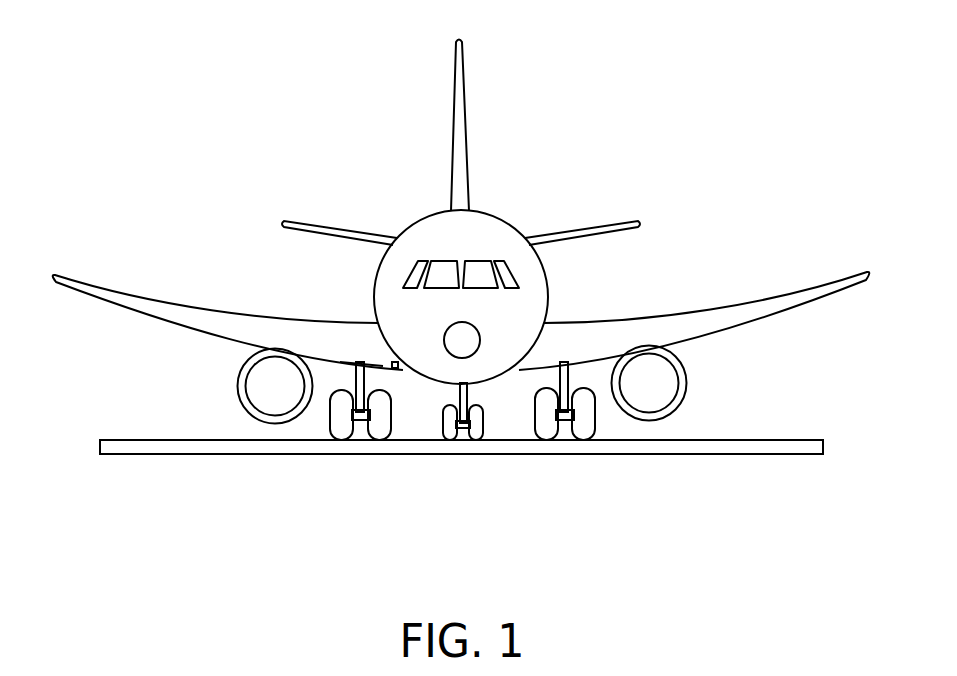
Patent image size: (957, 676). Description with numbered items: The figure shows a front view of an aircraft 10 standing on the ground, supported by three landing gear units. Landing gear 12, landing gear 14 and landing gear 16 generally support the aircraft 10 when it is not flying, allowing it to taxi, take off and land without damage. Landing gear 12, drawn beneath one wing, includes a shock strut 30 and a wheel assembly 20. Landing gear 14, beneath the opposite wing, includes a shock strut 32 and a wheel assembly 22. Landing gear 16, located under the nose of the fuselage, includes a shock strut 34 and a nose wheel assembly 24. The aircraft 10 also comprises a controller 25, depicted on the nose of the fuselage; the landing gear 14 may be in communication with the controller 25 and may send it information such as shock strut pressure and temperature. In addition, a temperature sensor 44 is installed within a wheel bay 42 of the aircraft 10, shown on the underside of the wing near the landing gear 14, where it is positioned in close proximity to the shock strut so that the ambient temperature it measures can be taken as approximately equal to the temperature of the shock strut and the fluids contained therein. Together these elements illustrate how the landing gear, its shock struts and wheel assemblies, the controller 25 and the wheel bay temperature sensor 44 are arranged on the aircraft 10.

The aircraft 10 is at (300, 119).
The landing gear 12 is at (635, 453).
The landing gear 14 is at (286, 462).
The landing gear 16 is at (516, 426).
The wheel assembly 20 is at (564, 430).
The wheel assembly 22 is at (360, 424).
The nose wheel assembly 24 is at (461, 432).
The controller 25 is at (428, 348).
The shock strut 30 is at (553, 384).
The shock strut 32 is at (392, 389).
The shock strut 34 is at (456, 389).
The wheel bay 42 is at (383, 365).
The temperature sensor 44 is at (397, 368).